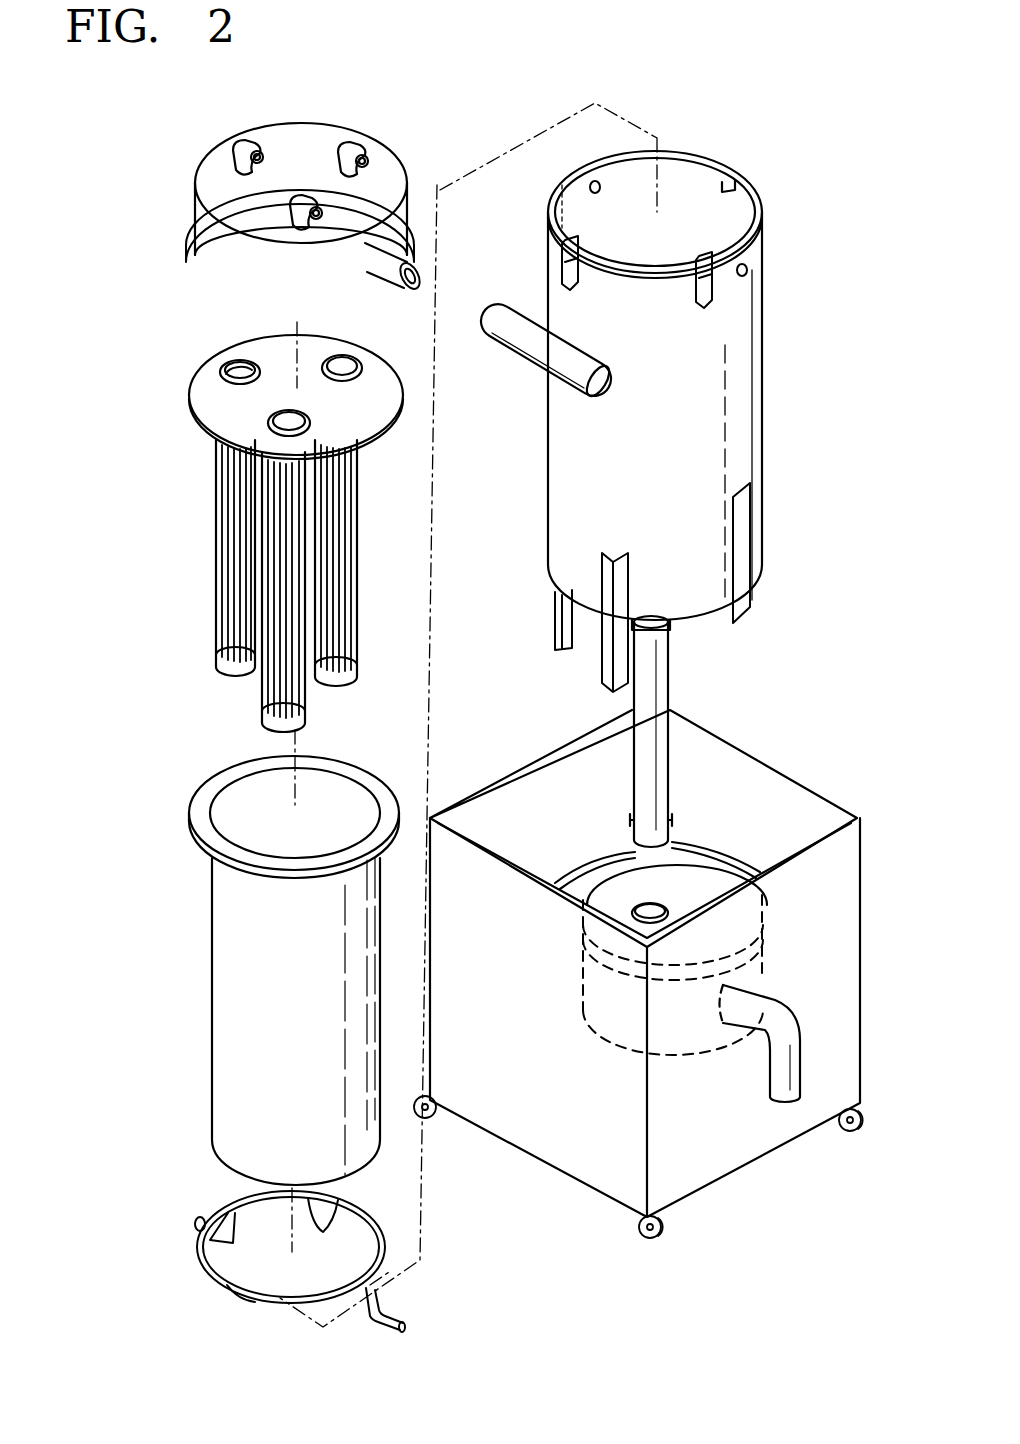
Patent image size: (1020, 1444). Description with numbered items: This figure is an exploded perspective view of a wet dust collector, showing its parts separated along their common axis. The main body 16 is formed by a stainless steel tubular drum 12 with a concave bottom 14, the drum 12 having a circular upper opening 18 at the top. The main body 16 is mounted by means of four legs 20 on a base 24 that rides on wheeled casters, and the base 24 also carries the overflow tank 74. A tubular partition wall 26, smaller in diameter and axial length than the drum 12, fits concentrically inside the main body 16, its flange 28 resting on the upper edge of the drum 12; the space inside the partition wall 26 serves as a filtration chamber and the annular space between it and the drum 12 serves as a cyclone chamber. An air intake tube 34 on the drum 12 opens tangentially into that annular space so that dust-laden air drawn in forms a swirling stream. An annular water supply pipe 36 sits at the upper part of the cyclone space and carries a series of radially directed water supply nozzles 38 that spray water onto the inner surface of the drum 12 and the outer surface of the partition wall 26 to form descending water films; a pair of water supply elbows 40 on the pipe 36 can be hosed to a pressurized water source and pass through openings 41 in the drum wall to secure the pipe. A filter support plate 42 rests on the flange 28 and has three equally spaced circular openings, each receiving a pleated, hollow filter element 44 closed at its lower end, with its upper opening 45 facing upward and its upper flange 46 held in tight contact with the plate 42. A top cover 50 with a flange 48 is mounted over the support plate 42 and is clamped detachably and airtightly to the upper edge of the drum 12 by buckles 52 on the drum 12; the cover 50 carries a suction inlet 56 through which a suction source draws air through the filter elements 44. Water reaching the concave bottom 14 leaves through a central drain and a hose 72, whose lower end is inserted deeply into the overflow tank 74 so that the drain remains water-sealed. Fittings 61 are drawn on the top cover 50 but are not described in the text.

The drum 12 is at (718, 364).
The concave bottom 14 is at (700, 616).
The main body 16 is at (790, 430).
The circular upper opening 18 is at (722, 196).
The legs 20 is at (610, 654).
The base 24 is at (587, 1170).
The tubular partition wall 26 is at (222, 1014).
The flange 28 is at (198, 824).
The air intake tube 34 is at (525, 342).
The annular water supply pipe 36 is at (200, 1250).
The water supply nozzles 38 is at (323, 1225).
The water supply elbows 40 is at (200, 1218).
The openings 41 is at (601, 186).
The filter support plate 42 is at (232, 427).
The filter element 44 is at (355, 562).
The upper opening 45 is at (232, 378).
The upper flange 46 is at (228, 368).
The flange 48 is at (212, 290).
The top cover 50 is at (218, 180).
The buckles 52 is at (565, 270).
The suction inlet 56 is at (394, 290).
The fittings 61 is at (362, 150).
The hose 72 is at (655, 752).
The overflow tank 74 is at (703, 888).